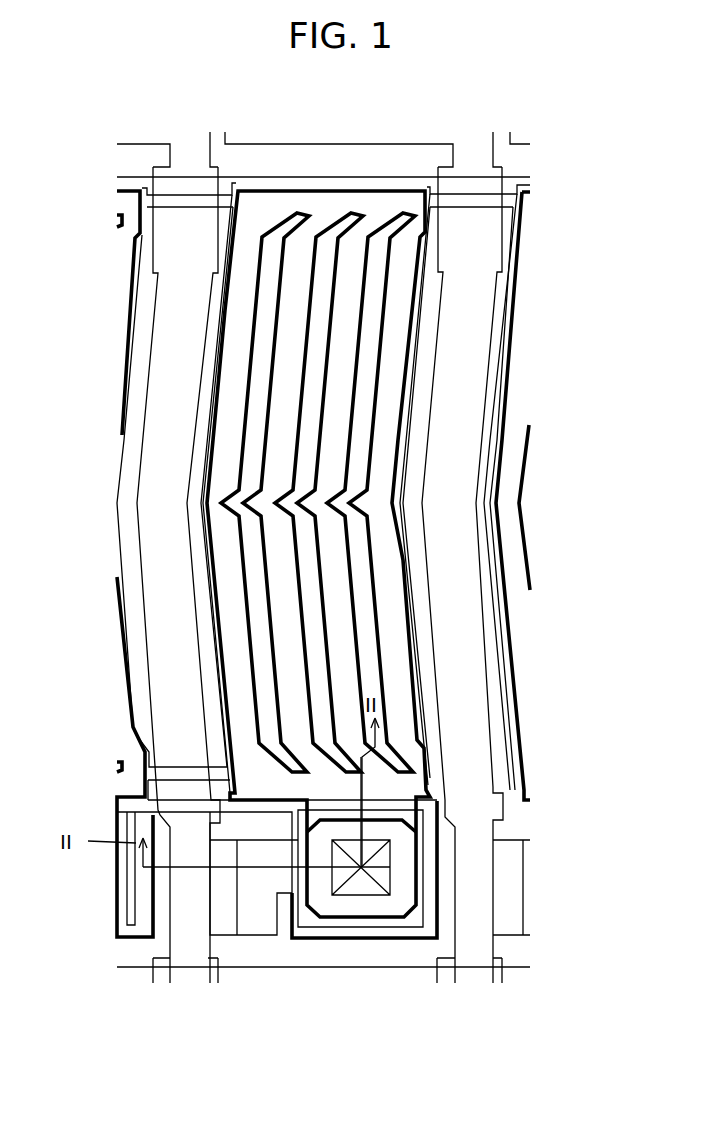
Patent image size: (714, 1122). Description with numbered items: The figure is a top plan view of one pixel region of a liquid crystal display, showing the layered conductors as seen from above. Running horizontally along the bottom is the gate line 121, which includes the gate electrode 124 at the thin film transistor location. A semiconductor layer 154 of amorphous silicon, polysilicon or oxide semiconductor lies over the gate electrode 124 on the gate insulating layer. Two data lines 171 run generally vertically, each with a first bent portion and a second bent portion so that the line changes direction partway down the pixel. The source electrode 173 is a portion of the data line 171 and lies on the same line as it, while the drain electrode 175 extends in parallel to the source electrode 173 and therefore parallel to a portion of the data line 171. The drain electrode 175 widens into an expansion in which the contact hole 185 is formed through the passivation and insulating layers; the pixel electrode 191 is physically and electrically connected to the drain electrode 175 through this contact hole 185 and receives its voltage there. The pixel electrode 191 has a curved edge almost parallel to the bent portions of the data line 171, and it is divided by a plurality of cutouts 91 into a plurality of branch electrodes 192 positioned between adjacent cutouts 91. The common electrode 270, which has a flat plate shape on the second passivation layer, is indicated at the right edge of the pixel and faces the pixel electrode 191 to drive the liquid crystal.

The cutouts 91 is at (325, 390).
The gate line 121 is at (403, 940).
The gate electrode 124 is at (142, 855).
The semiconductor layer 154 is at (230, 940).
The data line 171 is at (135, 540).
The source electrode 173 is at (210, 902).
The drain electrode 175 is at (281, 930).
The contact hole 185 is at (350, 890).
The pixel electrode 191 is at (443, 775).
The branch electrodes 192 is at (330, 640).
The common electrode 270 is at (530, 437).